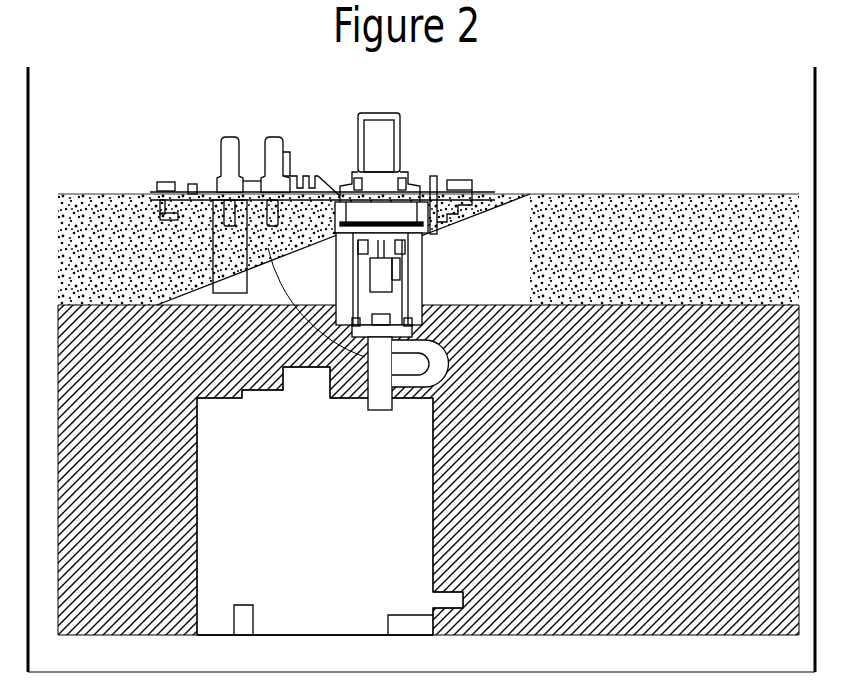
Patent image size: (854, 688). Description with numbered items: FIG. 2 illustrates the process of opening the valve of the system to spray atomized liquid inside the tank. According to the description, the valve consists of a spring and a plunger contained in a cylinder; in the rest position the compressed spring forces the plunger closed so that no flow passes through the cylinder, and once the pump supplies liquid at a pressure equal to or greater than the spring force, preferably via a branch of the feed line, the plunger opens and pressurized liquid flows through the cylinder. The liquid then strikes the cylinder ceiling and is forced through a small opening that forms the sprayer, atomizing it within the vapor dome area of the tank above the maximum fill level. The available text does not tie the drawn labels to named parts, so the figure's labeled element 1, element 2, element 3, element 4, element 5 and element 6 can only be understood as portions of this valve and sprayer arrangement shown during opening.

The ground 1 is at (428, 470).
The cavity 2 is at (330, 501).
The housing 3 is at (377, 261).
The valve 4 is at (381, 282).
The connection posts 5 is at (322, 194).
The gravel layer 6 is at (428, 249).